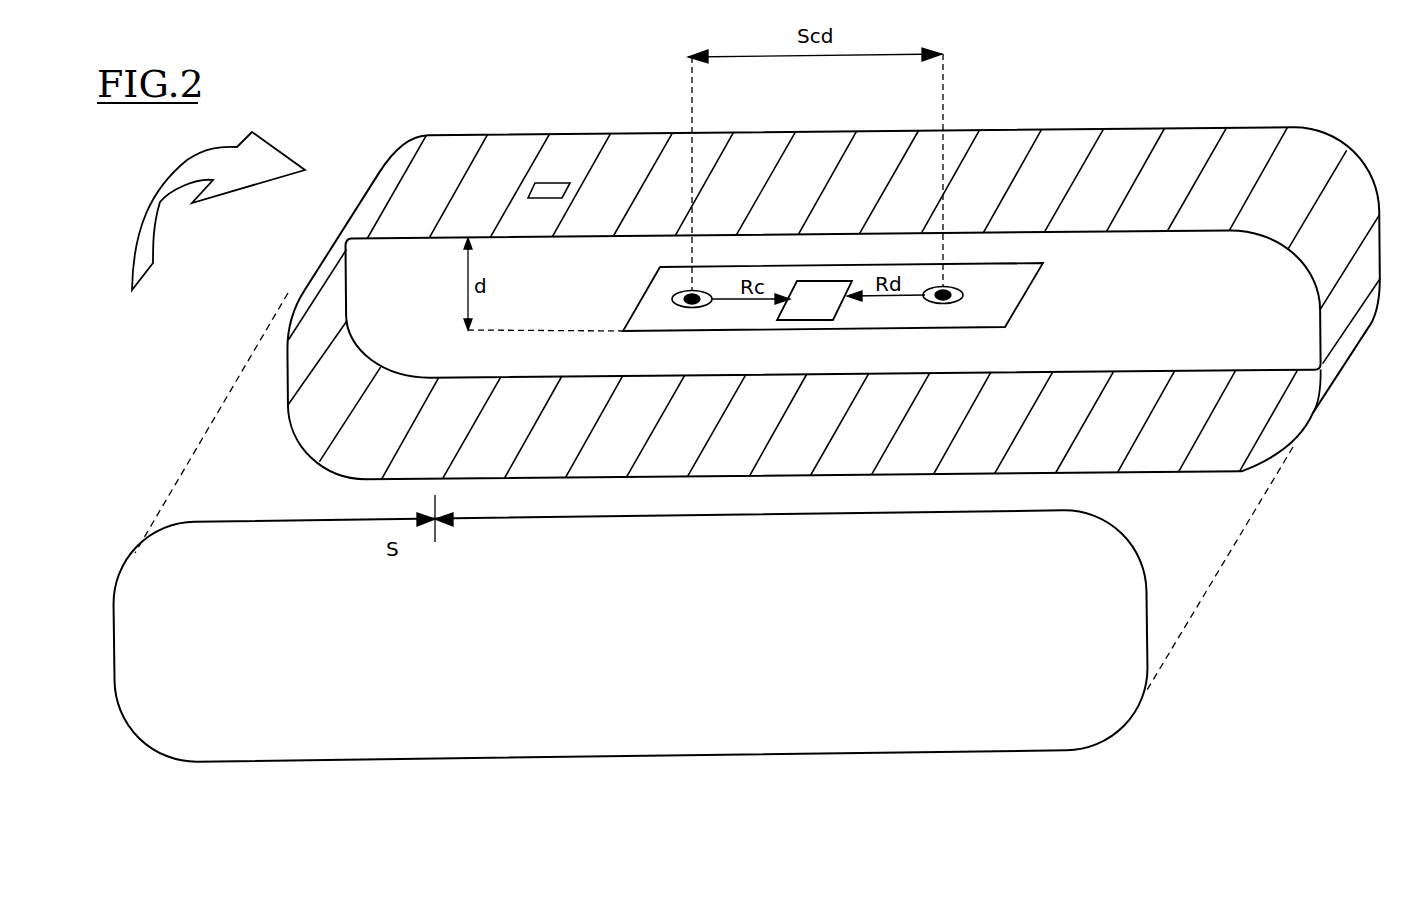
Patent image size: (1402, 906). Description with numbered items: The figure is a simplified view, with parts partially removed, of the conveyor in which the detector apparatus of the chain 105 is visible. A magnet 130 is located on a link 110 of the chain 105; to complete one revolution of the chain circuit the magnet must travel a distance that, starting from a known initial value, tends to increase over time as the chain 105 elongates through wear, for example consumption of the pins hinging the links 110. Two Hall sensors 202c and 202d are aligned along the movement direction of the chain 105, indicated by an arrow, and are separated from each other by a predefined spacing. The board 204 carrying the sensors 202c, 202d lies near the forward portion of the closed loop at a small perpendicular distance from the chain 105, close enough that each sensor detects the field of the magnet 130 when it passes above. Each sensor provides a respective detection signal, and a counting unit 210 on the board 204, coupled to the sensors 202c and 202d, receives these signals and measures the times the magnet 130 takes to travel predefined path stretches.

The link 110 is at (1185, 142).
The chain 105 is at (443, 263).
The magnet 130 is at (534, 200).
The board 204 is at (1027, 290).
The Hall sensor 202c is at (700, 292).
The Hall sensor 202d is at (950, 289).
The counting unit 210 is at (830, 311).